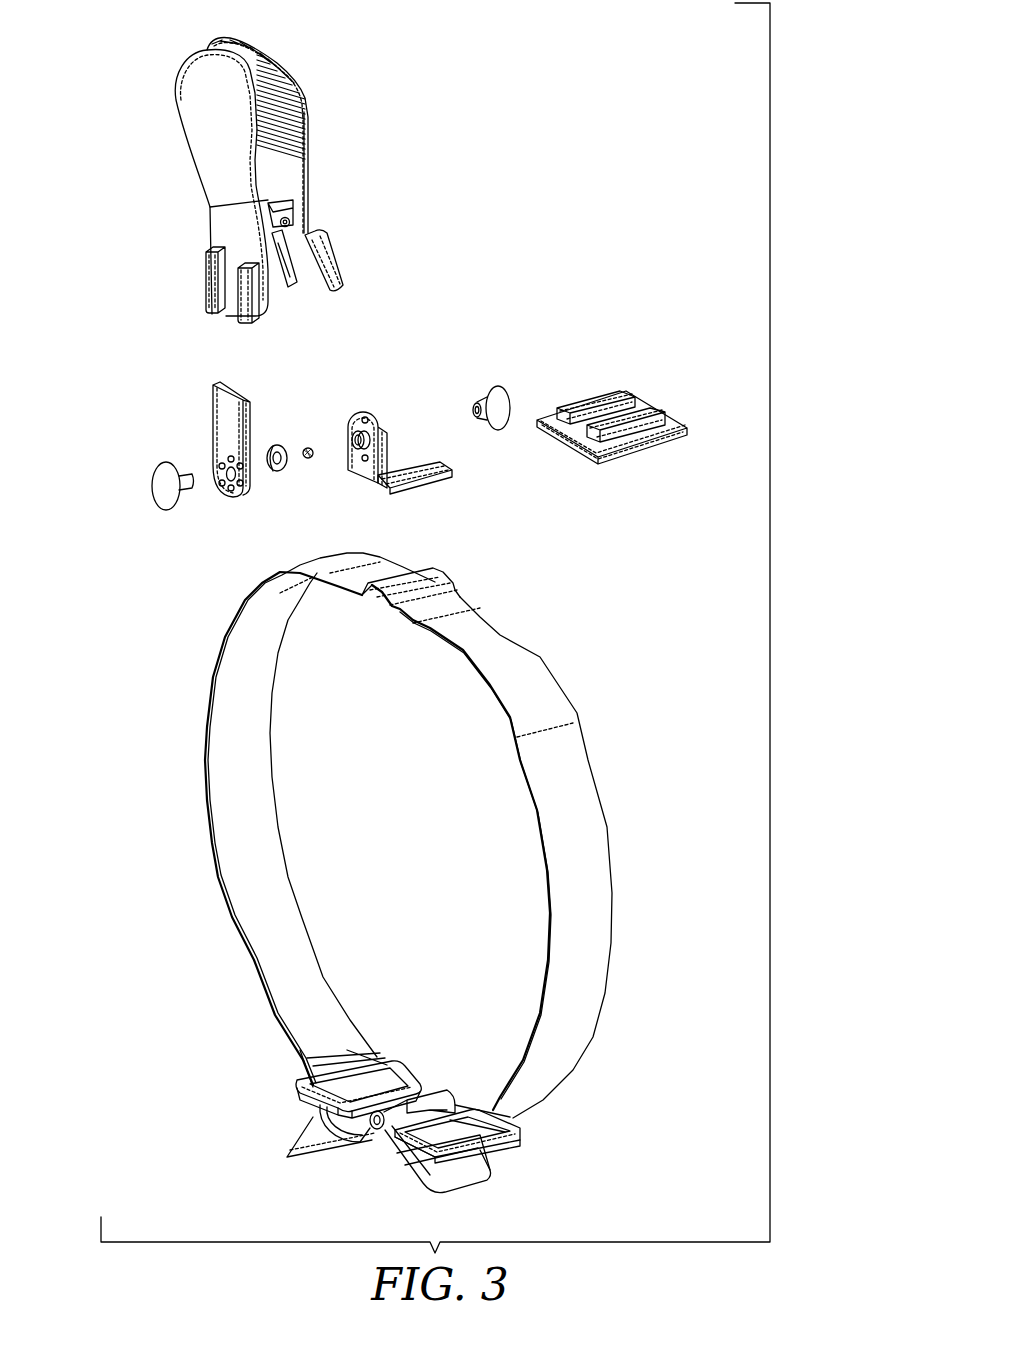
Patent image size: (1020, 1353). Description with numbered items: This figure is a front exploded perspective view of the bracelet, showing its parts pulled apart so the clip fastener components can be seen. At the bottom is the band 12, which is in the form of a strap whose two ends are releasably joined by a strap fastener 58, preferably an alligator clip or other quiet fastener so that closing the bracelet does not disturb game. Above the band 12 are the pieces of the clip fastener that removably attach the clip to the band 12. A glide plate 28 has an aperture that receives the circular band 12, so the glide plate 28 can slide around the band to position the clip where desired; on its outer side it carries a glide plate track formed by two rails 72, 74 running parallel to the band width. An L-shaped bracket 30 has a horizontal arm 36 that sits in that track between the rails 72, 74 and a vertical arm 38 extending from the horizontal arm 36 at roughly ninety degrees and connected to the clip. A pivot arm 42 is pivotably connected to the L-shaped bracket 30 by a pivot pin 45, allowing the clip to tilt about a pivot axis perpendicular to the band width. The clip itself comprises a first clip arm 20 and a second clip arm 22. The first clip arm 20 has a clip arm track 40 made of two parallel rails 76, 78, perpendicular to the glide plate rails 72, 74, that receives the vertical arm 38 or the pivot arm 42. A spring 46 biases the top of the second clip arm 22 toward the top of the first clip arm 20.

The band 12 is at (523, 655).
The first clip arm 20 is at (238, 187).
The second clip arm 22 is at (197, 108).
The glide plate 28 is at (629, 410).
The L-shaped bracket 30 is at (397, 435).
The horizontal arm 36 is at (425, 480).
The vertical arm 38 is at (362, 477).
The clip arm track 40 is at (237, 286).
The pivot arm 42 is at (206, 418).
The pivot pin 45 is at (158, 487).
The spring 46 is at (276, 205).
The strap fastener 58 is at (354, 1179).
The rail 72 is at (598, 400).
The rail 74 is at (650, 410).
The rail 76 is at (208, 268).
The rail 78 is at (260, 298).